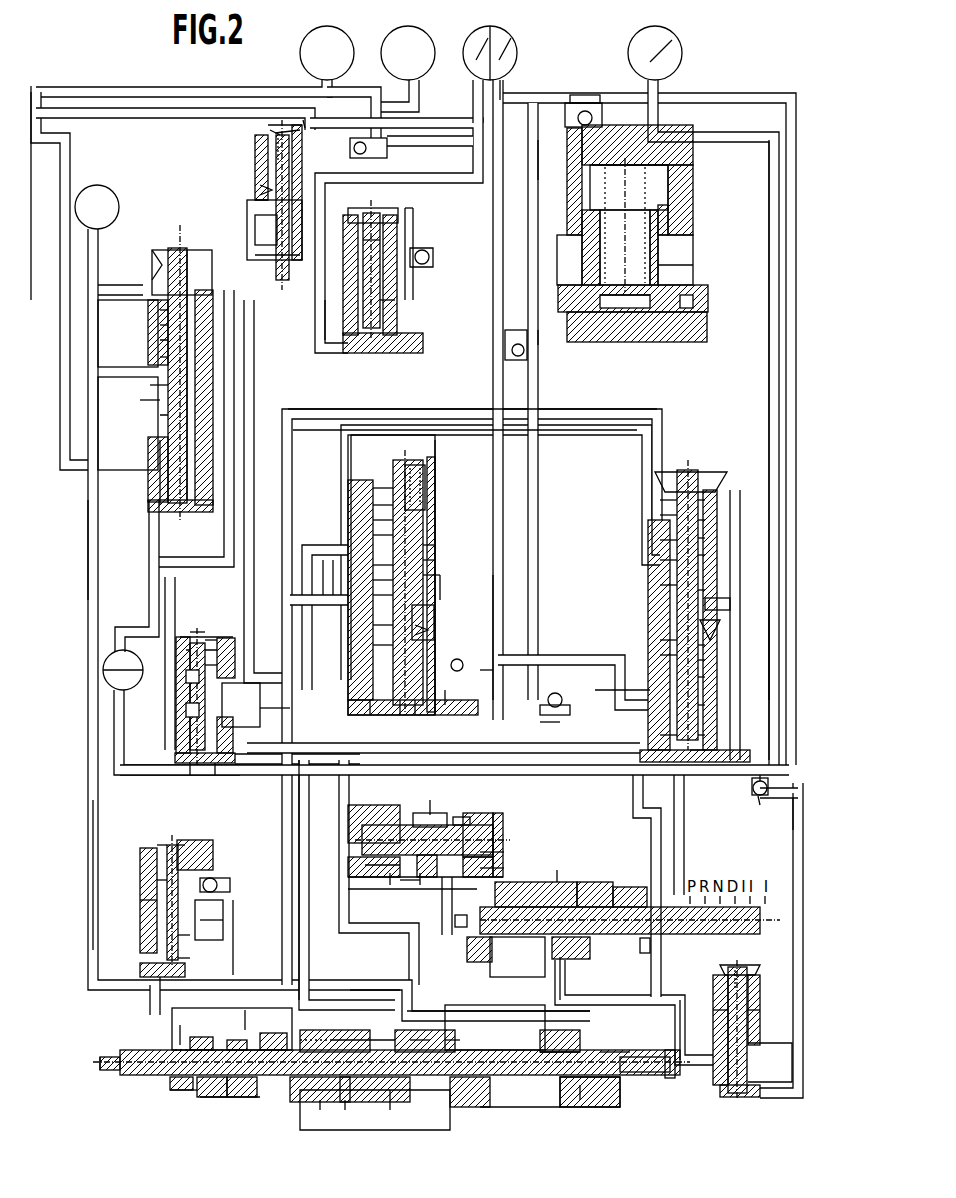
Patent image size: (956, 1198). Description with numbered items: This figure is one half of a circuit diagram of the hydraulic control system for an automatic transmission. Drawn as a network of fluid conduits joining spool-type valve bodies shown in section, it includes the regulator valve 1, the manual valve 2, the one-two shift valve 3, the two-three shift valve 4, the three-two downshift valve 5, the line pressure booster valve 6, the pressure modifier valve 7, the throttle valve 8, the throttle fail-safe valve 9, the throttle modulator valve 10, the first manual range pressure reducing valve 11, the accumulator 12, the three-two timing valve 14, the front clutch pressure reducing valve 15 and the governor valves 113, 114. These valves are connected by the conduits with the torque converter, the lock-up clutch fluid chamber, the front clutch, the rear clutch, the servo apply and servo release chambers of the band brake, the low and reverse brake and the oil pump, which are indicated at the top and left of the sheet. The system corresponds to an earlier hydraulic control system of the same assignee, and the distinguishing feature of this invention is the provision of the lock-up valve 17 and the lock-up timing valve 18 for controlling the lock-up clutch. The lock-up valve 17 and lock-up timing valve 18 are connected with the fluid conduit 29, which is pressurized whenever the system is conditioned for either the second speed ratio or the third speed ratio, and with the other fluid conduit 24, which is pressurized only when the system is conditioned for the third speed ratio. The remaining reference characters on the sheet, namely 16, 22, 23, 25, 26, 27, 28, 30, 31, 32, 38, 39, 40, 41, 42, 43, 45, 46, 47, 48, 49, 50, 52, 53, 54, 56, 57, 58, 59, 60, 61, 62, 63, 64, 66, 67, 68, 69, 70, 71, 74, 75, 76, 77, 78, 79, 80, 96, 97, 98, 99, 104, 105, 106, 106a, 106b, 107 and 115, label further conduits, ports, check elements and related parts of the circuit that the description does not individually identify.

The regulator valve 1 is at (183, 235).
The manual valve 2 is at (620, 885).
The 1-2 shift valve 3 is at (680, 470).
The 2-3 shift valve 4 is at (365, 452).
The 3-2 downshift valve 5 is at (203, 630).
The line pressure booster valve 6 is at (508, 828).
The pressure modifier valve 7 is at (172, 835).
The throttle valve 8 is at (445, 1025).
The throttle fail-safe valve 9 is at (165, 1078).
The throttle modulator valve 10 is at (585, 1040).
The first manual range pressure reducing valve 11 is at (705, 1068).
The accumulator 12 is at (700, 203).
The 3-2 timing valve 14 is at (375, 200).
The front clutch pressure reducing valve 15 is at (280, 118).
The line 16 is at (98, 560).
The lock-up valve 17 is at (127, 333).
The lock-up timing valve 18 is at (128, 401).
The line 22 is at (234, 325).
The line 23 is at (158, 730).
The fluid conduit 24 is at (101, 86).
The line 25 is at (595, 437).
The line 26 is at (774, 650).
The line 27 is at (768, 436).
The check valve 28 is at (774, 796).
The fluid conduit 29 is at (157, 108).
The line 30 is at (38, 140).
The line 31 is at (566, 655).
The line 32 is at (300, 597).
The line 38 is at (440, 455).
The line 39 is at (275, 715).
The line 40 is at (305, 316).
The line 41 is at (440, 808).
The line 42 is at (512, 447).
The line 43 is at (412, 900).
The line 45 is at (557, 870).
The line 46 is at (215, 890).
The line 47 is at (230, 961).
The line 48 is at (350, 1000).
The line 49 is at (420, 1100).
The line 50 is at (410, 1015).
The line 52 is at (150, 996).
The line 53 is at (375, 1114).
The line 54 is at (127, 850).
The line 56 is at (566, 990).
The line 57 is at (615, 1105).
The line 58 is at (770, 1062).
The line 59 is at (666, 990).
The line 60 is at (539, 490).
The check valve 61 is at (372, 159).
The line 62 is at (378, 100).
The line 63 is at (545, 140).
The line 64 is at (548, 325).
The line 66 is at (322, 370).
The line 67 is at (334, 320).
The check ball 68 is at (430, 252).
The line 69 is at (414, 274).
The line 70 is at (327, 181).
The chamber 71 is at (247, 214).
The orifice 74 is at (590, 95).
The check valve 75 is at (505, 350).
The check ball 76 is at (524, 355).
The check ball 77 is at (594, 122).
The orifice 78 is at (540, 724).
The check ball 79 is at (558, 692).
The line 80 is at (414, 214).
The line 96 is at (615, 688).
The line 97 is at (494, 670).
The line 98 is at (452, 698).
The line 99 is at (493, 600).
The forward clutch 104 is at (350, 32).
The reverse clutch 105 is at (428, 32).
The servo 106 is at (510, 32).
The servo apply chamber 106a is at (518, 50).
The servo release chamber 106b is at (474, 78).
The low and reverse brake 107 is at (632, 35).
The governor valve 113 is at (114, 630).
The governor valve 114 is at (105, 685).
The oil pump 115 is at (114, 192).